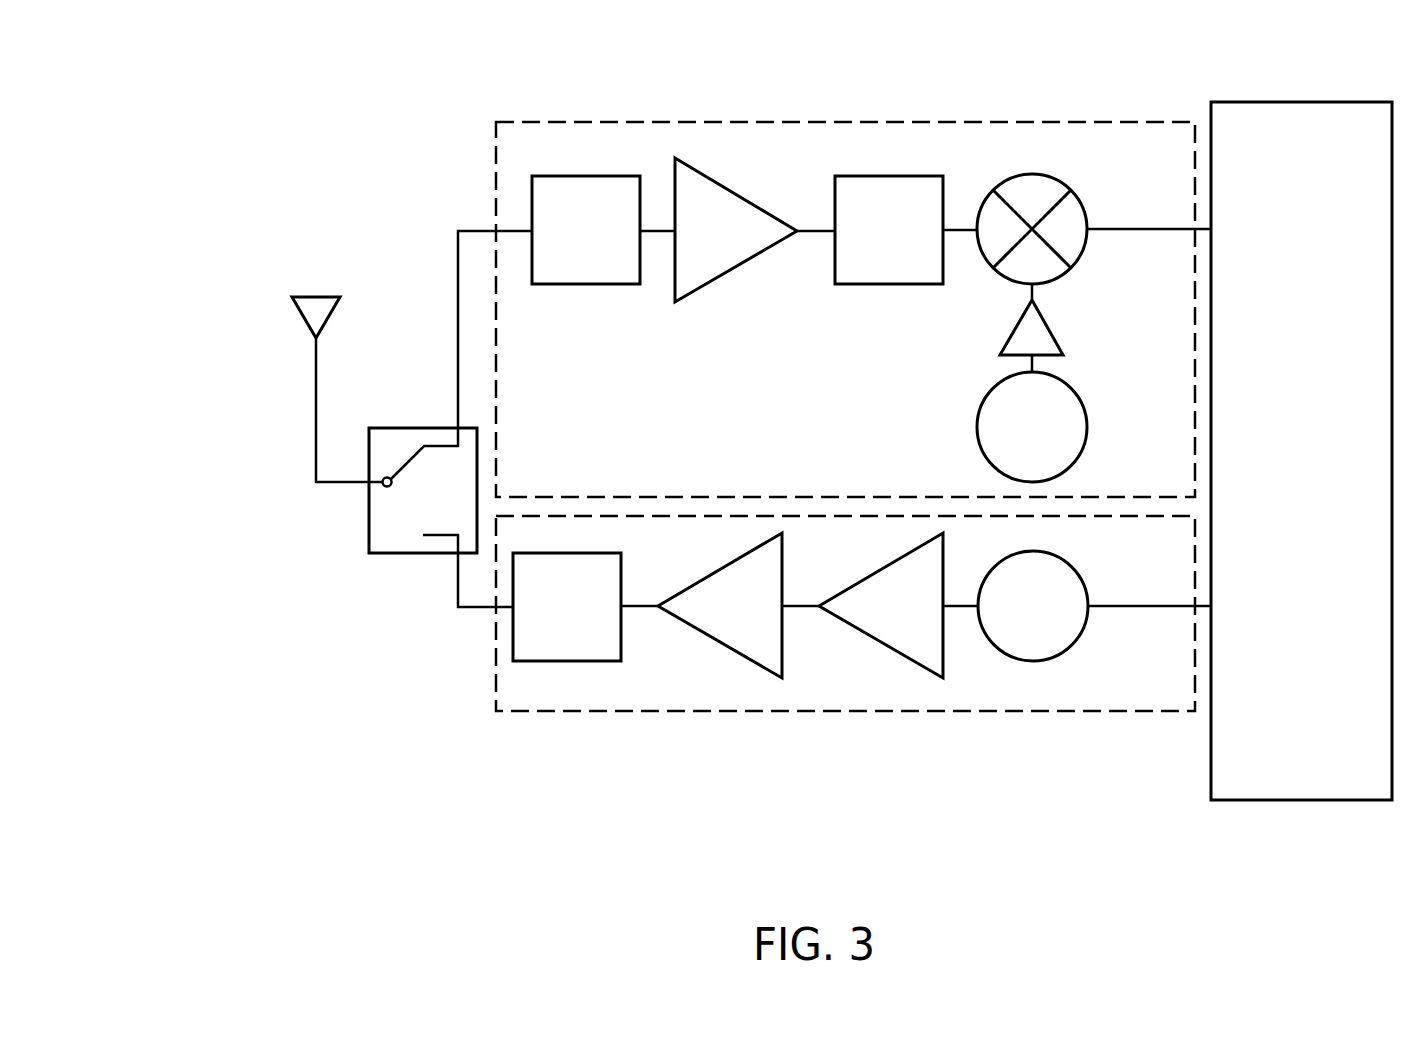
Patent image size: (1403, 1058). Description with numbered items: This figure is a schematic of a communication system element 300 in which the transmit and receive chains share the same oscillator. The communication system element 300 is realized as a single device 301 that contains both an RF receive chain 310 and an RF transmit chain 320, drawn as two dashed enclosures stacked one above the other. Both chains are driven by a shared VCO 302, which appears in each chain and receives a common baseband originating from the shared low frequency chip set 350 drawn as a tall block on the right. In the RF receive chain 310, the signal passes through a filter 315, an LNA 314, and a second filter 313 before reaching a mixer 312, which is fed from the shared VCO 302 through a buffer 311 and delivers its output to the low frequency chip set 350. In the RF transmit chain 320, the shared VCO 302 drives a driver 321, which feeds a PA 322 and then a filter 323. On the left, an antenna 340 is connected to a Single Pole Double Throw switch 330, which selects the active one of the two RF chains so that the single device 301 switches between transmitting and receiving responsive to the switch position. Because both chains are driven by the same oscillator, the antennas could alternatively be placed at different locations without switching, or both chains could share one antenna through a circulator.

The communication system element 300 is at (196, 66).
The single device 301 is at (204, 100).
The shared VCO 302 is at (1010, 458).
The RF receive chain 310 is at (853, 309).
The buffer 311 is at (1011, 323).
The mixer 312 is at (1026, 169).
The filter 313 is at (867, 259).
The LNA 314 is at (690, 259).
The filter 315 is at (564, 259).
The RF transmit chain 320 is at (853, 613).
The driver 321 is at (878, 636).
The PA 322 is at (724, 636).
The filter 323 is at (545, 636).
The Single Pole Double Throw (SPDT) switch 330 is at (366, 566).
The antenna 340 is at (287, 293).
The low frequency chip set 350 is at (1280, 496).